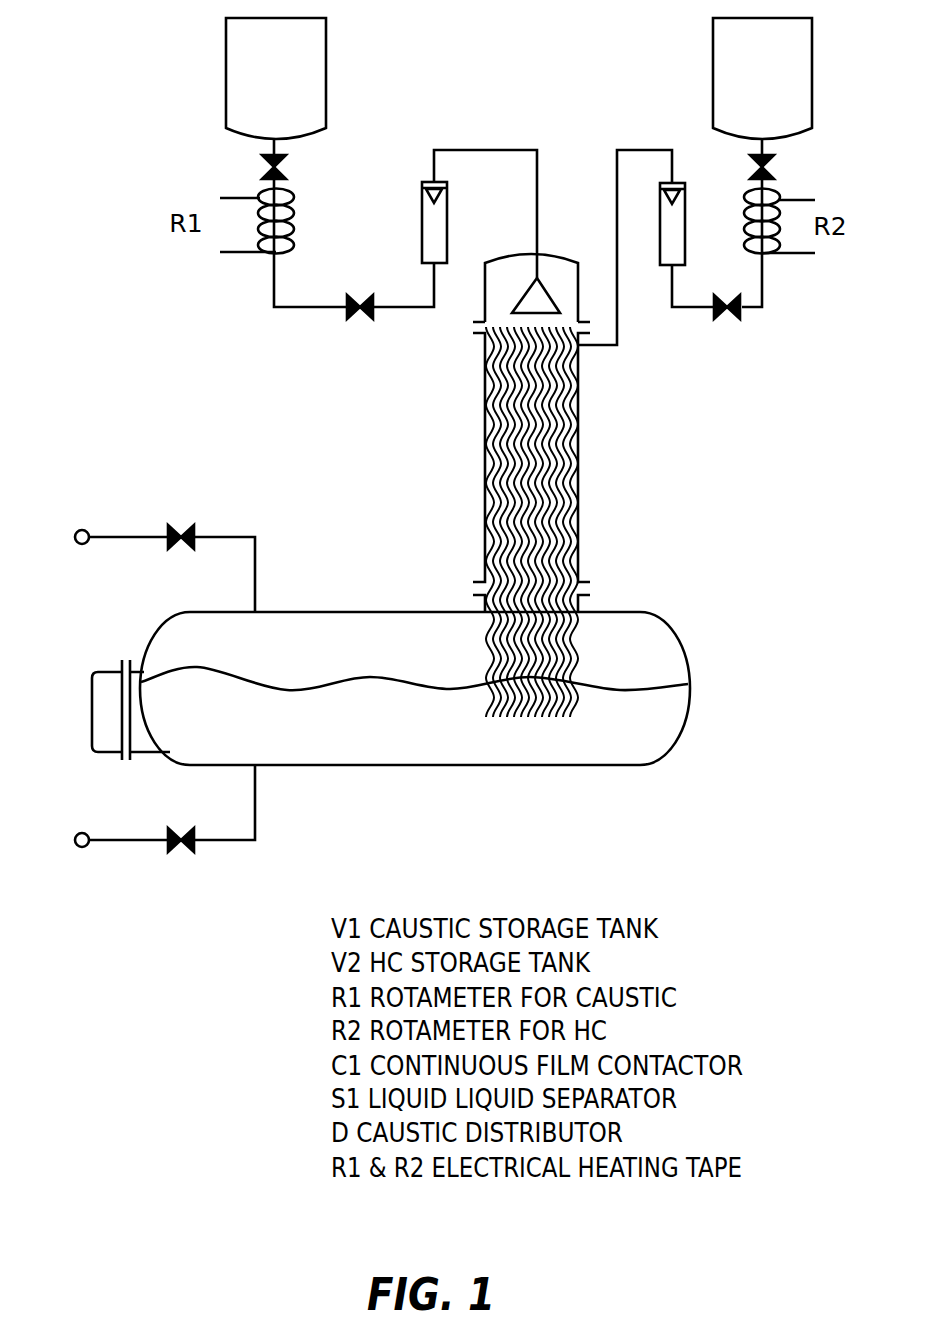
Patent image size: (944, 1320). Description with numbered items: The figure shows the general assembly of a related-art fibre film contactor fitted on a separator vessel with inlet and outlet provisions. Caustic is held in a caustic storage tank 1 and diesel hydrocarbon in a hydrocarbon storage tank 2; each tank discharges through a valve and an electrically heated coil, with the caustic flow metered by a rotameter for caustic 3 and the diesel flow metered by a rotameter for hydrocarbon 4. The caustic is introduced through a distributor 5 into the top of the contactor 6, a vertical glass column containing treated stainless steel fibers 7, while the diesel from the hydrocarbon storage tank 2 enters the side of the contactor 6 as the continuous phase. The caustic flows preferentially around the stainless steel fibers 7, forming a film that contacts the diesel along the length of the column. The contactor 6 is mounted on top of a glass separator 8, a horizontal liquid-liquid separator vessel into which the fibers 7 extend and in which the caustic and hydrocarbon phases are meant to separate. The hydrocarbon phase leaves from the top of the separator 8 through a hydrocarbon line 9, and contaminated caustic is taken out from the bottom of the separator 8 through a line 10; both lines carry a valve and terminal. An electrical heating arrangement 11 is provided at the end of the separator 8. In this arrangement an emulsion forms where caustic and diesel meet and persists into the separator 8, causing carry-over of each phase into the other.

The caustic storage tank 1 is at (326, 52).
The hydrocarbon storage tank 2 is at (713, 47).
The rotameter for caustic 3 is at (447, 210).
The rotameter for hydrocarbon 4 is at (685, 225).
The distributor 5 is at (548, 292).
The contactor 6 is at (578, 410).
The stainless steel fibers 7 is at (565, 540).
The separator 8 is at (640, 612).
The hydrocarbon line 9 is at (237, 537).
The caustic outlet line 10 is at (222, 840).
The electrical heating arrangement 11 is at (92, 686).